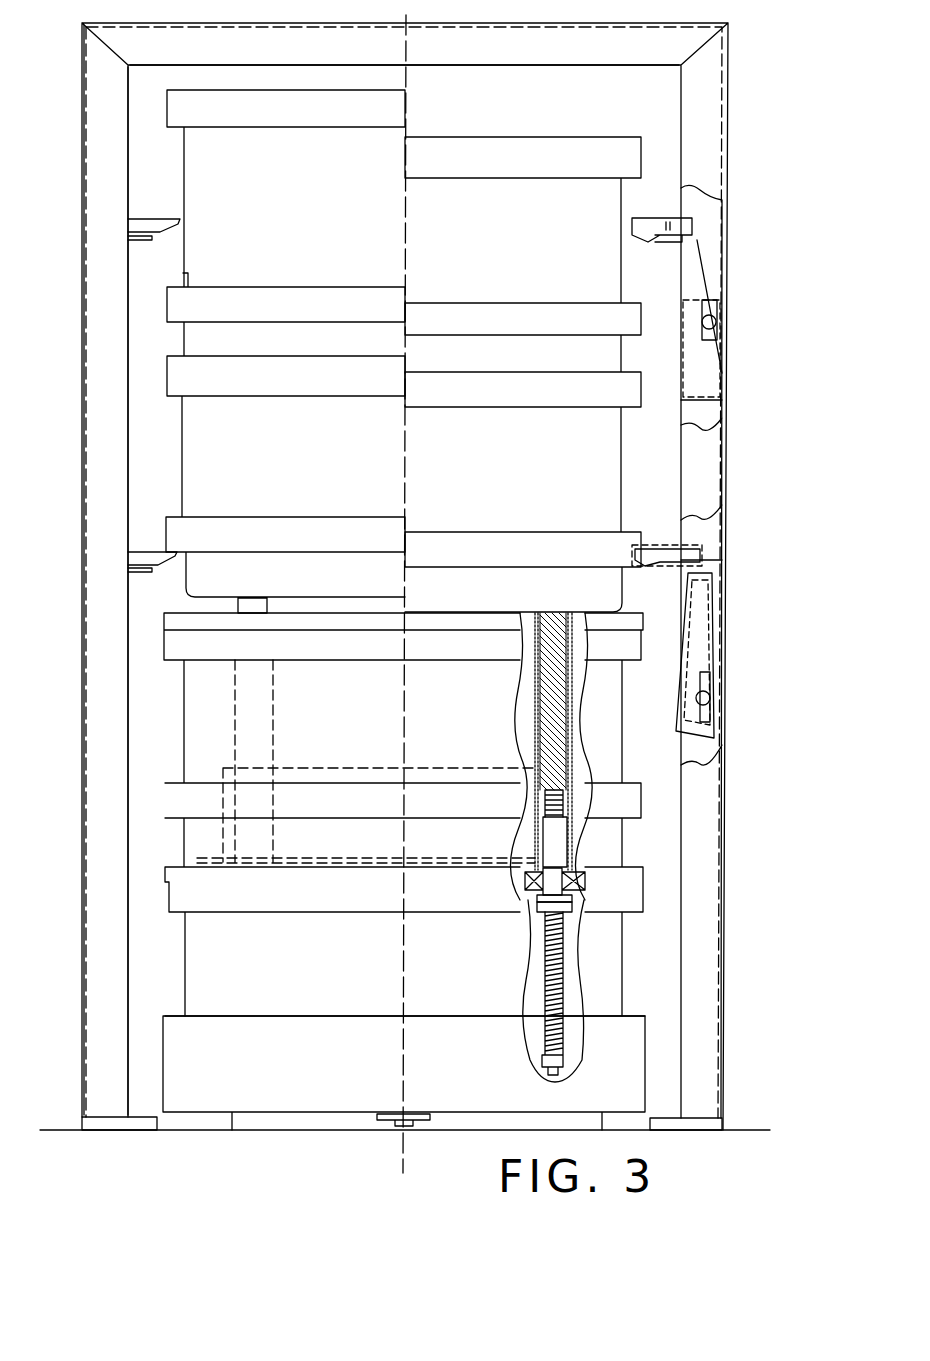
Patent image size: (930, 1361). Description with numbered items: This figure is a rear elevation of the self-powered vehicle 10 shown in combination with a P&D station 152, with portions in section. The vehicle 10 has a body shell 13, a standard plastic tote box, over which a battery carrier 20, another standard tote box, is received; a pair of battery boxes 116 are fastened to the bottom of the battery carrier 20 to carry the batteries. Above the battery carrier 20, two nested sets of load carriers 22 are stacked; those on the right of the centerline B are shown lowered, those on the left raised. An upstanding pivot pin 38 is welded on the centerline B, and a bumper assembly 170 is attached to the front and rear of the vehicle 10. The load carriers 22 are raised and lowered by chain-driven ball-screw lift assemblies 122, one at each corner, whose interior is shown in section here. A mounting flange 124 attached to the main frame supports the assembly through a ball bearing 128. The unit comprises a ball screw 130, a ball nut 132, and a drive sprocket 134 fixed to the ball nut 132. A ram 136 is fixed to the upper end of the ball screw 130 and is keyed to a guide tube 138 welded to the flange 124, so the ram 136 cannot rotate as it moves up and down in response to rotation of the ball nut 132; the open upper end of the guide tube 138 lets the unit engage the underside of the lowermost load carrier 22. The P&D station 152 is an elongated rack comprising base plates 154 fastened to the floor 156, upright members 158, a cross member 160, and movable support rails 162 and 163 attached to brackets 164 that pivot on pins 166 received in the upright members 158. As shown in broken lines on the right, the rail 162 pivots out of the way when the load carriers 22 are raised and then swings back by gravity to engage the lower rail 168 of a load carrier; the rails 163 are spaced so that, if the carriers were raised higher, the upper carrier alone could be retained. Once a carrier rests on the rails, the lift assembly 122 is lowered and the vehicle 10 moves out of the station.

The self-powered vehicle 10 is at (158, 830).
The body shell 13 is at (622, 972).
The battery carrier 20 is at (625, 833).
The load carriers 22 is at (403, 351).
The upstanding pivot pin 38 is at (397, 1130).
The battery boxes 116 is at (355, 768).
The ball-screw lift assembly 122 is at (533, 678).
The mounting flange 124 is at (578, 868).
The ball bearing 128 is at (530, 885).
The ball screw 130 is at (545, 950).
The ball nut 132 is at (543, 837).
The drive sprocket 134 is at (575, 905).
The ram 136 is at (568, 683).
The guide tube 138 is at (537, 722).
The P&D station 152 is at (756, 112).
The base plates 154 is at (100, 1117).
The floor 156 is at (755, 1130).
The upright members 158 is at (82, 225).
The cross member 160 is at (470, 65).
The support rail 162 is at (150, 548).
The support rail 163 is at (172, 220).
The brackets 164 is at (722, 285).
The pins 166 is at (712, 330).
The lower rail 168 is at (640, 322).
The bumper assembly 170 is at (158, 1014).
The centerline B is at (405, 1155).